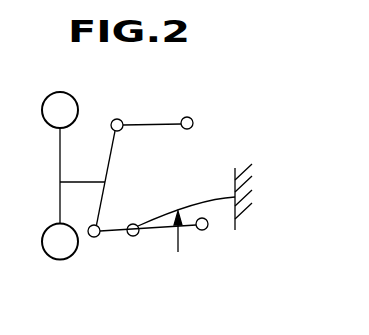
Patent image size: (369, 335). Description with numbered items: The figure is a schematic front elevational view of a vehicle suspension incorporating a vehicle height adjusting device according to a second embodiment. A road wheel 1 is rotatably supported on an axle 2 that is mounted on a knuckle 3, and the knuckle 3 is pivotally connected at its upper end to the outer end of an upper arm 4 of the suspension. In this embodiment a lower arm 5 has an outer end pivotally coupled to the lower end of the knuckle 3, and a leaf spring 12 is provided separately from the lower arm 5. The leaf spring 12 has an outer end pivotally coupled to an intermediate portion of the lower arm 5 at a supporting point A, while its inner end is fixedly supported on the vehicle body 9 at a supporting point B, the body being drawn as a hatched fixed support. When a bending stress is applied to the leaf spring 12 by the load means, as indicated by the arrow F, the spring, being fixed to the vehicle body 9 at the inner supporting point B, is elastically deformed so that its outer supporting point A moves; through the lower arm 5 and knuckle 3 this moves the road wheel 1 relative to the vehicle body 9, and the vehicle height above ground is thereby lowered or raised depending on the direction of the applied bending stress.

The road wheel 1 is at (52, 94).
The axle 2 is at (82, 177).
The knuckle 3 is at (113, 157).
The upper arm 4 is at (158, 119).
The lower arm 5 is at (147, 235).
The vehicle body 9 is at (238, 192).
The leaf spring 12 is at (210, 200).
The supporting point A is at (128, 238).
The supporting point B is at (232, 200).
The arrow F is at (174, 242).